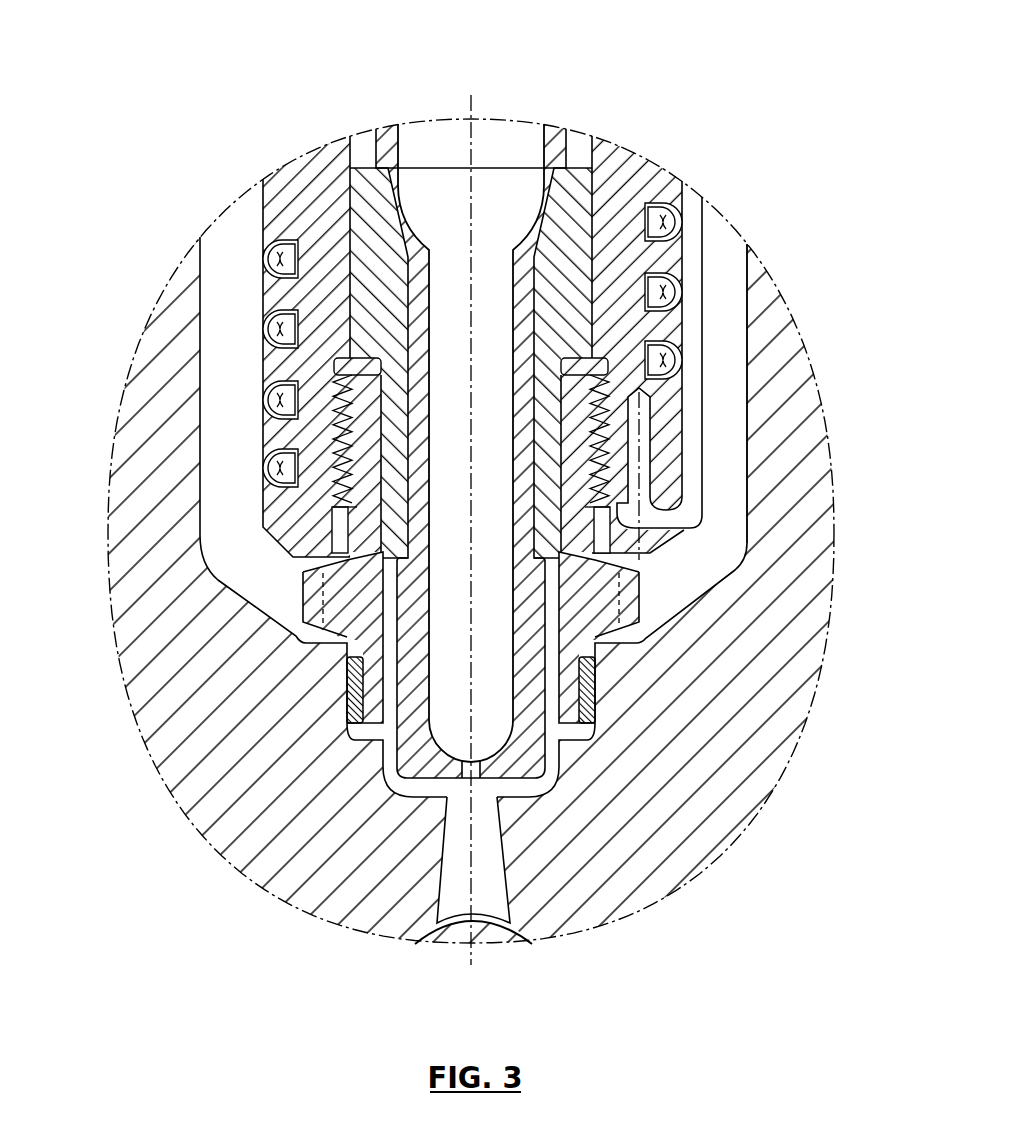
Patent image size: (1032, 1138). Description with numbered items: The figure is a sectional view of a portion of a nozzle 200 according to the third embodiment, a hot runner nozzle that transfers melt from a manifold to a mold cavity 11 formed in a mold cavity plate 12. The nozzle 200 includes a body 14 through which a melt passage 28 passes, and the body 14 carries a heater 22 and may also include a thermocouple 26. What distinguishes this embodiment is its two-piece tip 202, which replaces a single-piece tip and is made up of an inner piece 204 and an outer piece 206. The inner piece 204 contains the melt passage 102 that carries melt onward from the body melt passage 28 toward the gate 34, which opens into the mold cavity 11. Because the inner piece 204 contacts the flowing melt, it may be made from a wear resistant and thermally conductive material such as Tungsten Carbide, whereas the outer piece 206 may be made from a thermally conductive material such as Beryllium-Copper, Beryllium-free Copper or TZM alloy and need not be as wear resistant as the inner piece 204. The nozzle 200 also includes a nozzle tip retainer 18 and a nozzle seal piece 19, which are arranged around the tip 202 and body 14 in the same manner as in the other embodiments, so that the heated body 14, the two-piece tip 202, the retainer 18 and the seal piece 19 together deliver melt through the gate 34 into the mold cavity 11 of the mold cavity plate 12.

The mold cavity 11 is at (553, 990).
The mold cavity plate 12 is at (516, 569).
The body 14 is at (643, 110).
The nozzle tip retainer 18 is at (848, 594).
The nozzle seal piece 19 is at (834, 716).
The heater 22 is at (778, 163).
The thermocouple 26 is at (812, 250).
The melt passage 28 is at (502, 138).
The gate 34 is at (330, 938).
The melt passage 102 is at (440, 185).
The nozzle 200 is at (570, 392).
The two-piece tip 202 is at (325, 314).
The inner piece 204 is at (392, 208).
The outer piece 206 is at (690, 148).